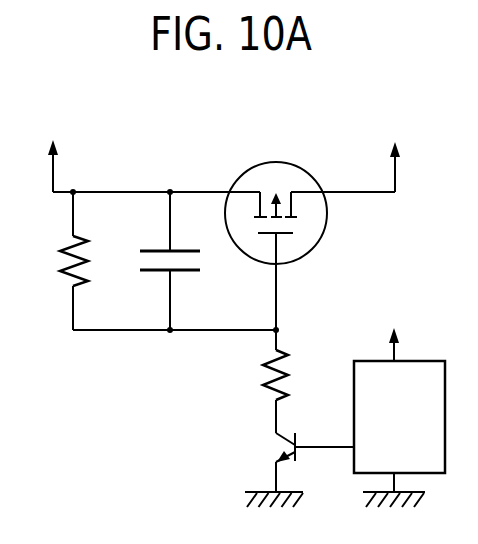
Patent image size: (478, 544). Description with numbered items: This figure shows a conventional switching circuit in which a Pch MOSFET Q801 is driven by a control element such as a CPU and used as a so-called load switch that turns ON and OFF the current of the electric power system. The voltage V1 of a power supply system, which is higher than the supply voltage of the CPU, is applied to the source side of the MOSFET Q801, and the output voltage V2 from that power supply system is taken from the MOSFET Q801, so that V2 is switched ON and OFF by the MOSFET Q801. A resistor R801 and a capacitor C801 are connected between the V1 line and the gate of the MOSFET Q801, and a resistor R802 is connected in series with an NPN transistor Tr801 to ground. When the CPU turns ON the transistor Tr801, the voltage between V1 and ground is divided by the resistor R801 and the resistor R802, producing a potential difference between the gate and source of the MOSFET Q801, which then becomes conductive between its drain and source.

The resistor R801 is at (49, 259).
The capacitor C801 is at (158, 243).
The MOSFET Q801 is at (276, 198).
The resistor R802 is at (241, 375).
The NPN transistor Tr801 is at (253, 444).
The element CPU is at (399, 417).
The voltage of power supply system V1 is at (56, 152).
The output voltage V2 is at (397, 153).